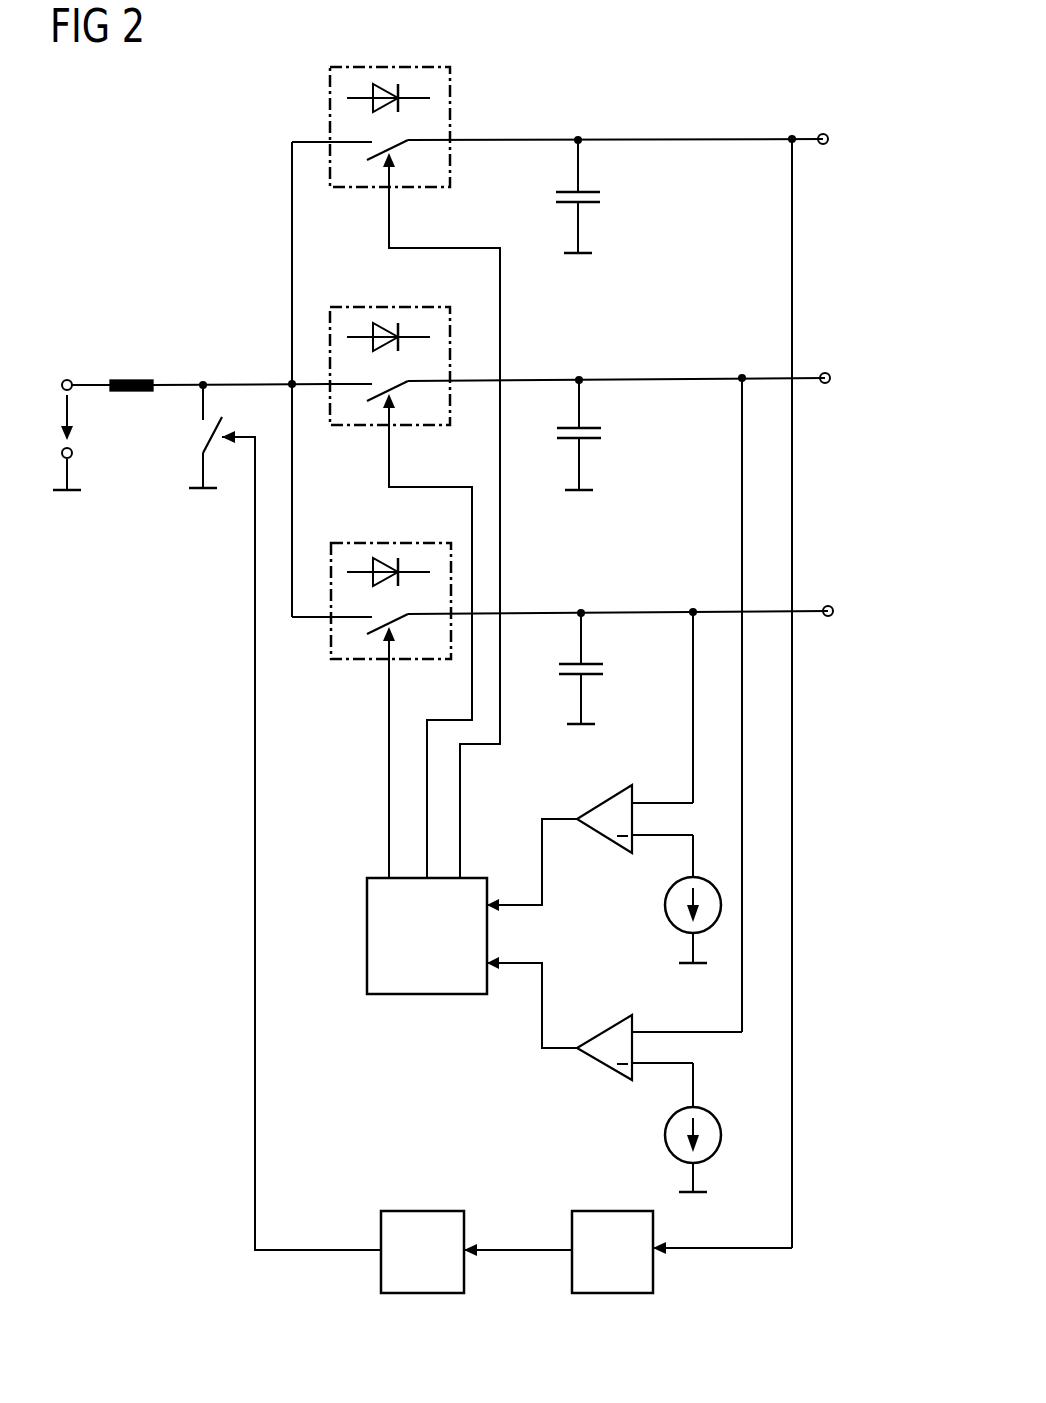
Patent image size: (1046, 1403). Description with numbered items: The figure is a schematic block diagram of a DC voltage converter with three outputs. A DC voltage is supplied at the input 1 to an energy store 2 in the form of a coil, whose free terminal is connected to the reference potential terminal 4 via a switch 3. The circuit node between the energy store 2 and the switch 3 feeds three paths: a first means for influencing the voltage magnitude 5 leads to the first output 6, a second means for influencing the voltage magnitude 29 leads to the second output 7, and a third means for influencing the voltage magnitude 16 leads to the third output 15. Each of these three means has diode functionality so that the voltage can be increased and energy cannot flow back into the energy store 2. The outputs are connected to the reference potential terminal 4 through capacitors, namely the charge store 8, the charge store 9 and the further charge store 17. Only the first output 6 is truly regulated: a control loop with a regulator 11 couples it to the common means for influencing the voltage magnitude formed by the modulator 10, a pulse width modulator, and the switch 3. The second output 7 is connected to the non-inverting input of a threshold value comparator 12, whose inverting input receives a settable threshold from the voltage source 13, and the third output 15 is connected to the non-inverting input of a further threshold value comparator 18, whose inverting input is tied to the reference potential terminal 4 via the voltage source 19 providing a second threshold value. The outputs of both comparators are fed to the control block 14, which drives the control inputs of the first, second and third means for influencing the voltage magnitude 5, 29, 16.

The input 1 is at (68, 375).
The energy store 2 is at (132, 378).
The switch 3 is at (210, 437).
The reference potential terminal 4 is at (203, 492).
The first means for influencing the voltage magnitude 5 is at (408, 67).
The first output 6 is at (826, 130).
The second output 7 is at (828, 370).
The charge store 8 is at (602, 196).
The charge store 9 is at (603, 432).
The modulator 10 is at (422, 1296).
The regulator 11 is at (612, 1296).
The threshold value comparator 12 is at (606, 1030).
The voltage source 13 is at (664, 1135).
The control block 14 is at (367, 936).
The third output 15 is at (830, 604).
The third means for influencing the voltage magnitude 16 is at (352, 542).
The further charge store 17 is at (605, 668).
The further threshold value comparator 18 is at (605, 840).
The voltage source 19 is at (664, 905).
The second means for influencing the voltage magnitude 29 is at (350, 305).